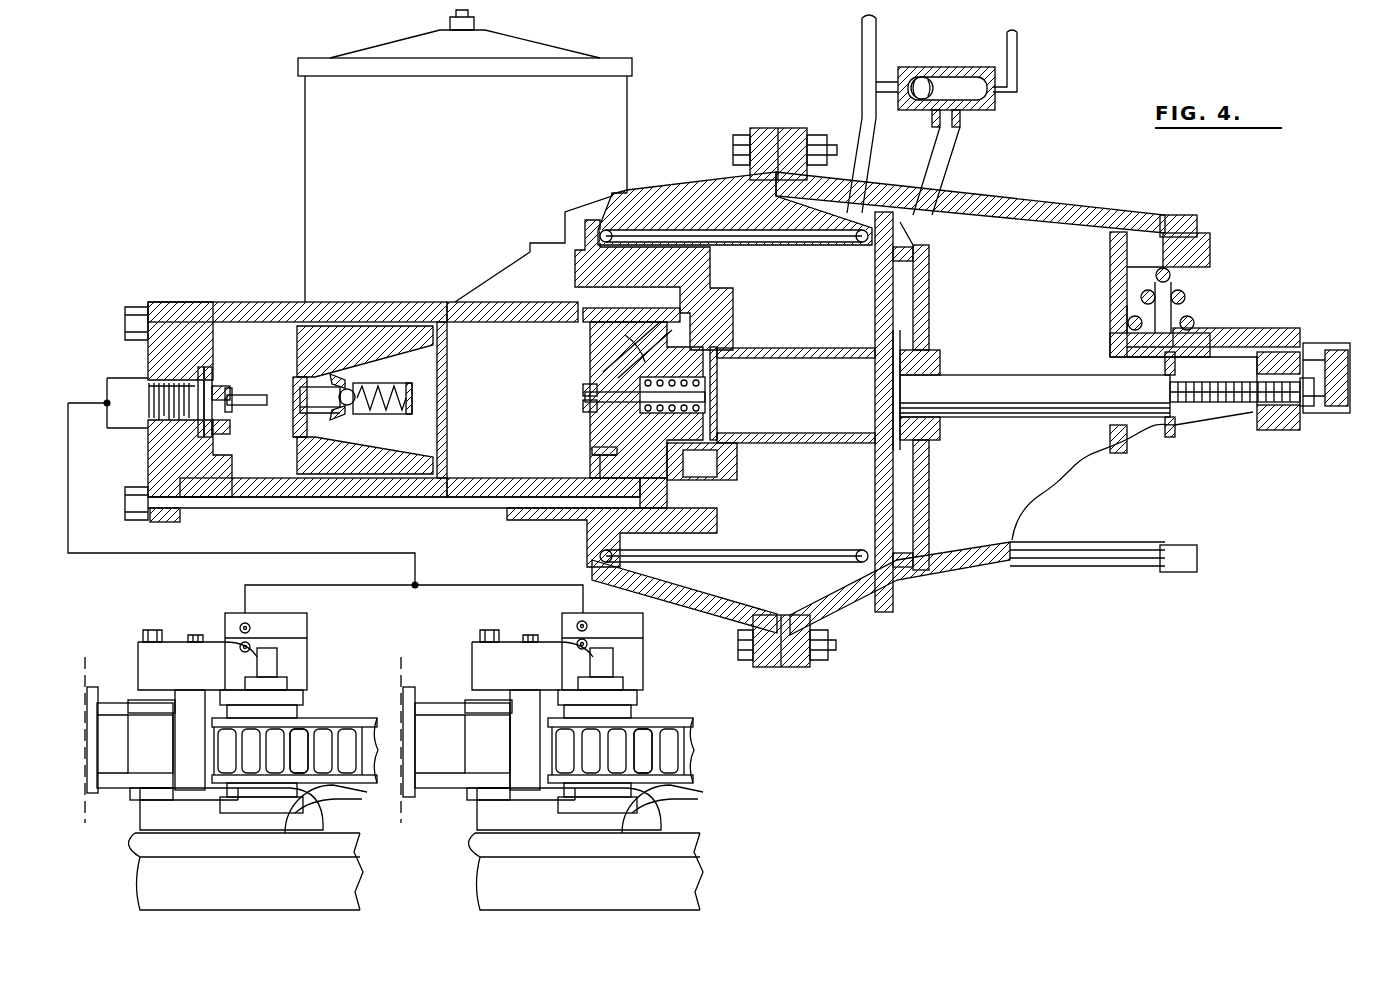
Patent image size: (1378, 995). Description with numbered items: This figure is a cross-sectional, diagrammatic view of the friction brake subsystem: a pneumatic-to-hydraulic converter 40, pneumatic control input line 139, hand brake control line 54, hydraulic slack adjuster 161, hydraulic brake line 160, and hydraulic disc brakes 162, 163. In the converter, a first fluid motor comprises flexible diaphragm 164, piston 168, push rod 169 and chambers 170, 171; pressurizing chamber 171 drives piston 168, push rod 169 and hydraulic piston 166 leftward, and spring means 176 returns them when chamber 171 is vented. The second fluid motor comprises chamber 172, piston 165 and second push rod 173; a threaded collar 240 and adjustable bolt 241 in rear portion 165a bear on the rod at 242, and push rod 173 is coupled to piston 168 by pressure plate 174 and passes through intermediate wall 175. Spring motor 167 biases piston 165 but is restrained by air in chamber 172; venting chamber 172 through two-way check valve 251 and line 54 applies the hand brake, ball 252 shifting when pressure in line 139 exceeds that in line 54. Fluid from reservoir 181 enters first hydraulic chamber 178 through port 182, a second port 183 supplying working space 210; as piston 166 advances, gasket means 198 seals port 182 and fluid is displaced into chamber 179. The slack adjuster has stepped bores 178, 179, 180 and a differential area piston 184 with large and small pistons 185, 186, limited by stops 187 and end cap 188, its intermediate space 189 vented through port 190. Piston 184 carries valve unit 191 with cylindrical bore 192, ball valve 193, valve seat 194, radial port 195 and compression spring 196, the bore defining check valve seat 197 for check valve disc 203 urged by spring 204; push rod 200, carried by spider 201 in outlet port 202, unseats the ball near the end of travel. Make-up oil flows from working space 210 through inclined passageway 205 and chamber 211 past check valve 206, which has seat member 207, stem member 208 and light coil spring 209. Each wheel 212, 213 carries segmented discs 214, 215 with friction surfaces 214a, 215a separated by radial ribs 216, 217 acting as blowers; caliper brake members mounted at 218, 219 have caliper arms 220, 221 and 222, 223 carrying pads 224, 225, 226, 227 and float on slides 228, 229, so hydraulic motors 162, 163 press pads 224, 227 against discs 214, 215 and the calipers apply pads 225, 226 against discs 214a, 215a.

The pneumatic-to-hydraulic converter 40 is at (972, 662).
The hand brake control line 54 is at (1018, 62).
The pneumatic control input line 139 is at (862, 55).
The hydraulic brake line 160 is at (105, 405).
The hydraulic slack adjuster 161 is at (230, 300).
The hydraulic disc brake 162 is at (282, 623).
The hydraulic disc brake 163 is at (577, 623).
The flexible diaphragm 164 is at (866, 206).
The piston 165 is at (1113, 277).
The rear portion of piston 165a is at (1250, 330).
The hydraulic piston 166 is at (683, 422).
The spring motor 167 is at (1170, 275).
The piston 168 is at (873, 293).
The push rod 169 is at (843, 350).
The chamber 170 is at (818, 508).
The chamber 171 is at (930, 282).
The chamber 172 is at (1054, 322).
The second push rod 173 is at (1052, 393).
The pressure plate 174 is at (908, 342).
The intermediate wall 175 is at (920, 478).
The spring means 176 is at (790, 235).
The first hydraulic chamber 178 is at (558, 417).
The chamber 179 is at (434, 399).
The chamber 180 is at (259, 459).
The reservoir 181 is at (600, 106).
The port 182 is at (575, 313).
The second port 183 is at (706, 292).
The differential area reciprocal piston means 184 is at (330, 322).
The large diameter piston 185 is at (438, 322).
The small diameter piston 186 is at (297, 460).
The stops 187 is at (450, 353).
The end cap 188 is at (176, 452).
The intermediate space 189 is at (387, 470).
The port 190 is at (330, 480).
The valve unit 191 is at (333, 382).
The cylindrical bore 192 is at (305, 398).
The ball valve 193 is at (397, 388).
The valve seat 194 is at (345, 407).
The radial port 195 is at (353, 388).
The compression spring 196 is at (385, 413).
The check valve seat 197 is at (300, 410).
The gasket means 198 is at (607, 323).
The push rod 200 is at (262, 402).
The spider 201 is at (214, 378).
The outlet port 202 is at (208, 360).
The check valve disc 203 is at (224, 392).
The spring 204 is at (222, 436).
The inclined passageway 205 is at (640, 362).
The check valve 206 is at (588, 386).
The seat member 207 is at (607, 449).
The stem member 208 is at (718, 373).
The light coil compression spring 209 is at (690, 394).
The working space 210 is at (707, 452).
The chamber 211 is at (613, 405).
The wheel 212 is at (338, 878).
The wheel 213 is at (680, 877).
The segmented disc 214 is at (372, 712).
The friction braking surface 214a is at (362, 800).
The segmented disc 215 is at (687, 718).
The friction braking surface 215a is at (690, 780).
The radial rib 216 is at (333, 755).
The radial rib 217 is at (653, 755).
The caliper mounting 218 is at (85, 680).
The caliper mounting 219 is at (412, 697).
The caliper arm 220 is at (177, 657).
The caliper arm 221 is at (160, 810).
The caliper arm 222 is at (480, 655).
The caliper arm 223 is at (497, 813).
The brake pad 224 is at (287, 727).
The brake pad 225 is at (280, 789).
The brake pad 226 is at (633, 798).
The brake pad 227 is at (623, 713).
The cylinder 228 is at (151, 745).
The caliper slide 229 is at (507, 751).
The threaded collar 240 is at (1310, 344).
The adjustable bolt means 241 is at (1313, 420).
The bearing point 242 is at (1172, 395).
The two-way check valve 251 is at (965, 67).
The ball 252 is at (918, 77).